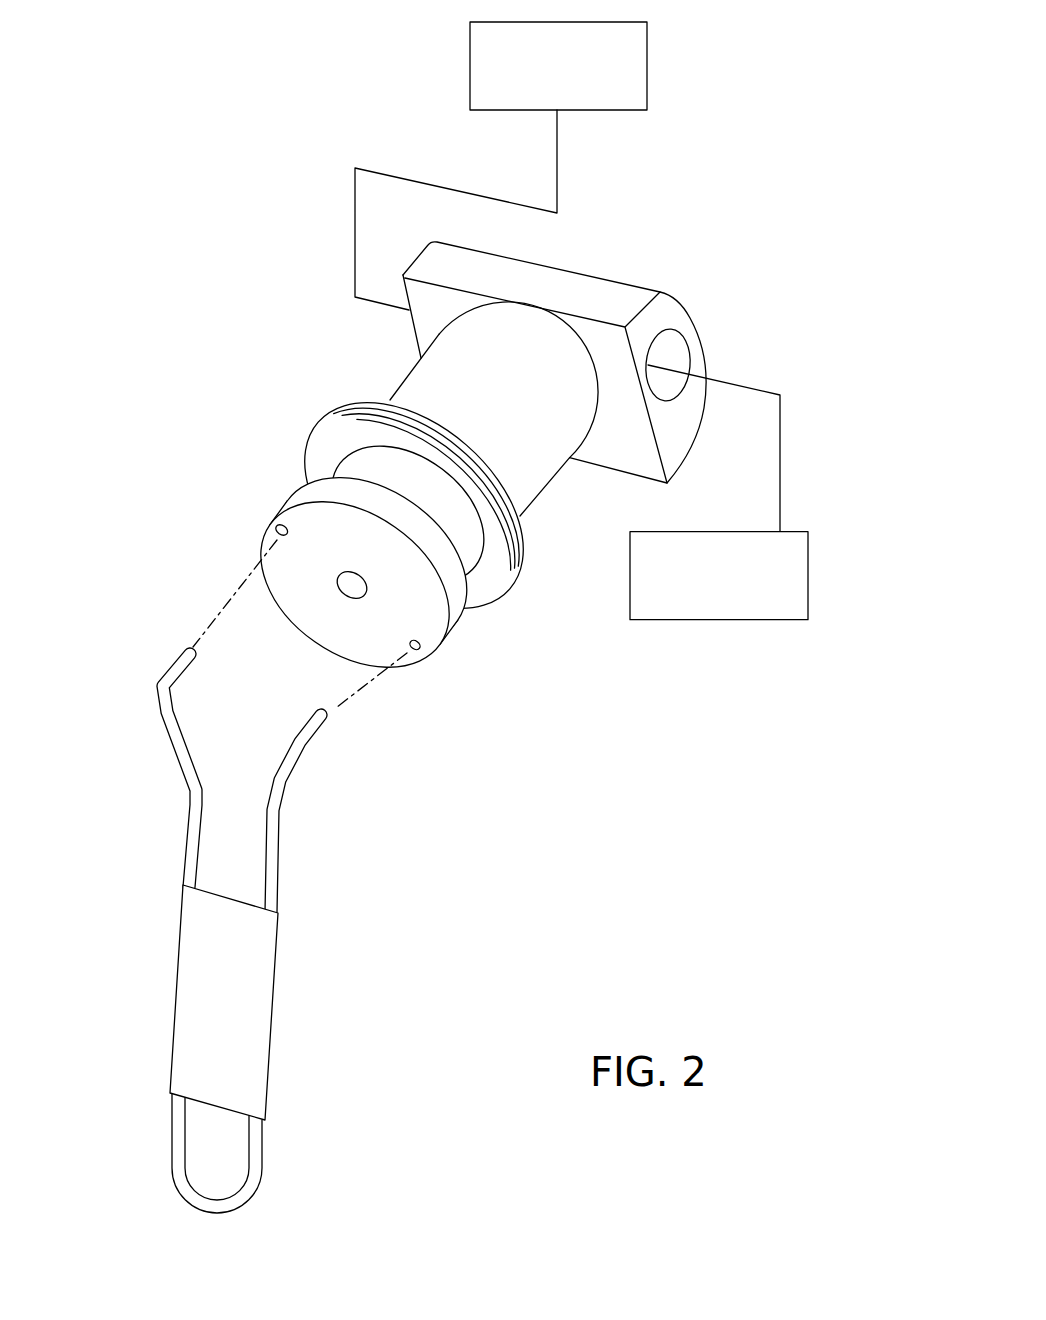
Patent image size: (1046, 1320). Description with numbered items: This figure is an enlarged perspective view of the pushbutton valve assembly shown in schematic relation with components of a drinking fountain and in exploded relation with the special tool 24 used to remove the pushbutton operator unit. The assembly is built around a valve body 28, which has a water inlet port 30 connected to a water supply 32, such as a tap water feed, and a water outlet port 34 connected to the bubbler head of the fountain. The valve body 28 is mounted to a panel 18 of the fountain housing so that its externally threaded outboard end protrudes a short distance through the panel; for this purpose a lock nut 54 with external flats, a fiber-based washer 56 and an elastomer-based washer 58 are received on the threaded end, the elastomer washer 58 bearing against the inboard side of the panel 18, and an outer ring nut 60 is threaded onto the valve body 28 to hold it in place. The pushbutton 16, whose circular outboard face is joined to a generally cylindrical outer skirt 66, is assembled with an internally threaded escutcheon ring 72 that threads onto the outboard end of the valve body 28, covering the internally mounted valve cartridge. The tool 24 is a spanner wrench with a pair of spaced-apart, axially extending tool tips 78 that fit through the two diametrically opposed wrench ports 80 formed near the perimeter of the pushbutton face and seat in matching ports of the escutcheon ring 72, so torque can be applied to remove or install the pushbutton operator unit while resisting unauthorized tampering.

The pushbutton 16 is at (312, 595).
The panel 18 is at (638, 88).
The special tool 24 is at (142, 992).
The valve body 28 is at (442, 380).
The water inlet port 30 is at (690, 347).
The water supply 32 is at (725, 622).
The water outlet port 34 is at (400, 285).
The lock nut 54 is at (465, 425).
The fiber-based washer 56 is at (353, 403).
The elastomer-based washer 58 is at (320, 448).
The outer ring nut 60 is at (373, 457).
The outer skirt 66 is at (452, 612).
The escutcheon ring 72 is at (454, 547).
The tool tips 78 is at (172, 657).
The wrench ports 80 is at (275, 528).